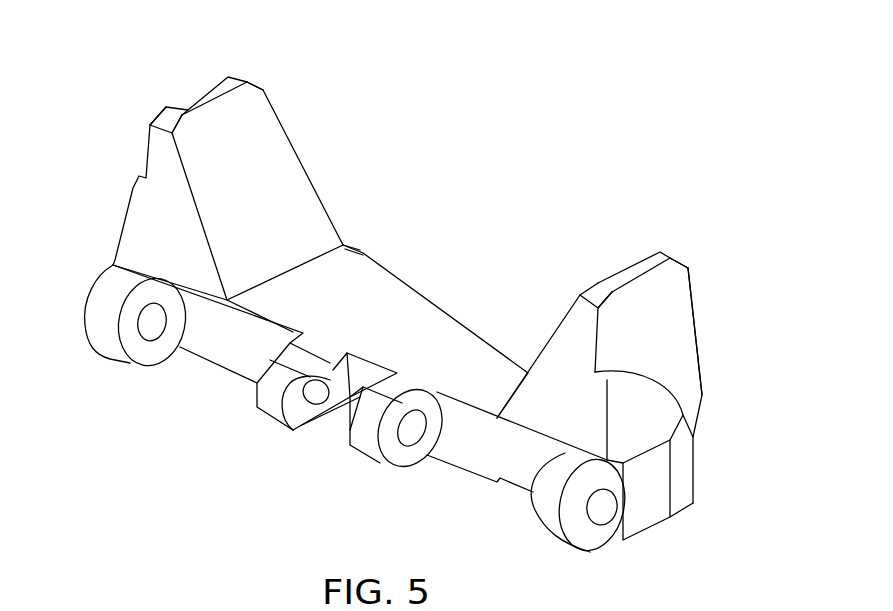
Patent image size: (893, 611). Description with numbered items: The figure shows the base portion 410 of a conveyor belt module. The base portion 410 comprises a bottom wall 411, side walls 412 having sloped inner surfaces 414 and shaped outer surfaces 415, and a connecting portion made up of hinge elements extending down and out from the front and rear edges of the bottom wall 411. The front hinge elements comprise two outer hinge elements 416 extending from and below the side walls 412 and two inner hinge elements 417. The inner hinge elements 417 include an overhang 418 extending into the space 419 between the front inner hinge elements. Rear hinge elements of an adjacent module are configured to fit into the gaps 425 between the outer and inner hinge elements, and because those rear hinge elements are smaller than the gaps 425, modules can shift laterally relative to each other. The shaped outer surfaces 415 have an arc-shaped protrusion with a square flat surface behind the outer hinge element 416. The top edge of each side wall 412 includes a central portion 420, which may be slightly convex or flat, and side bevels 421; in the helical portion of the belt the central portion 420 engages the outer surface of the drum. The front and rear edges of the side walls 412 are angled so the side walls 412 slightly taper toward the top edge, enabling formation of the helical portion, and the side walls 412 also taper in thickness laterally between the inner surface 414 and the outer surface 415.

The base portion 410 is at (498, 140).
The bottom wall 411 is at (385, 270).
The side walls 412 is at (160, 157).
The sloped inner surfaces 414 is at (270, 199).
The shaped outer surfaces 415 is at (125, 213).
The outer hinge elements 416 is at (132, 353).
The inner hinge elements 417 is at (275, 415).
The overhang 418 is at (295, 433).
The space 419 is at (338, 444).
The central portion 420 is at (208, 93).
The side bevels 421 is at (167, 110).
The gaps 425 is at (222, 343).